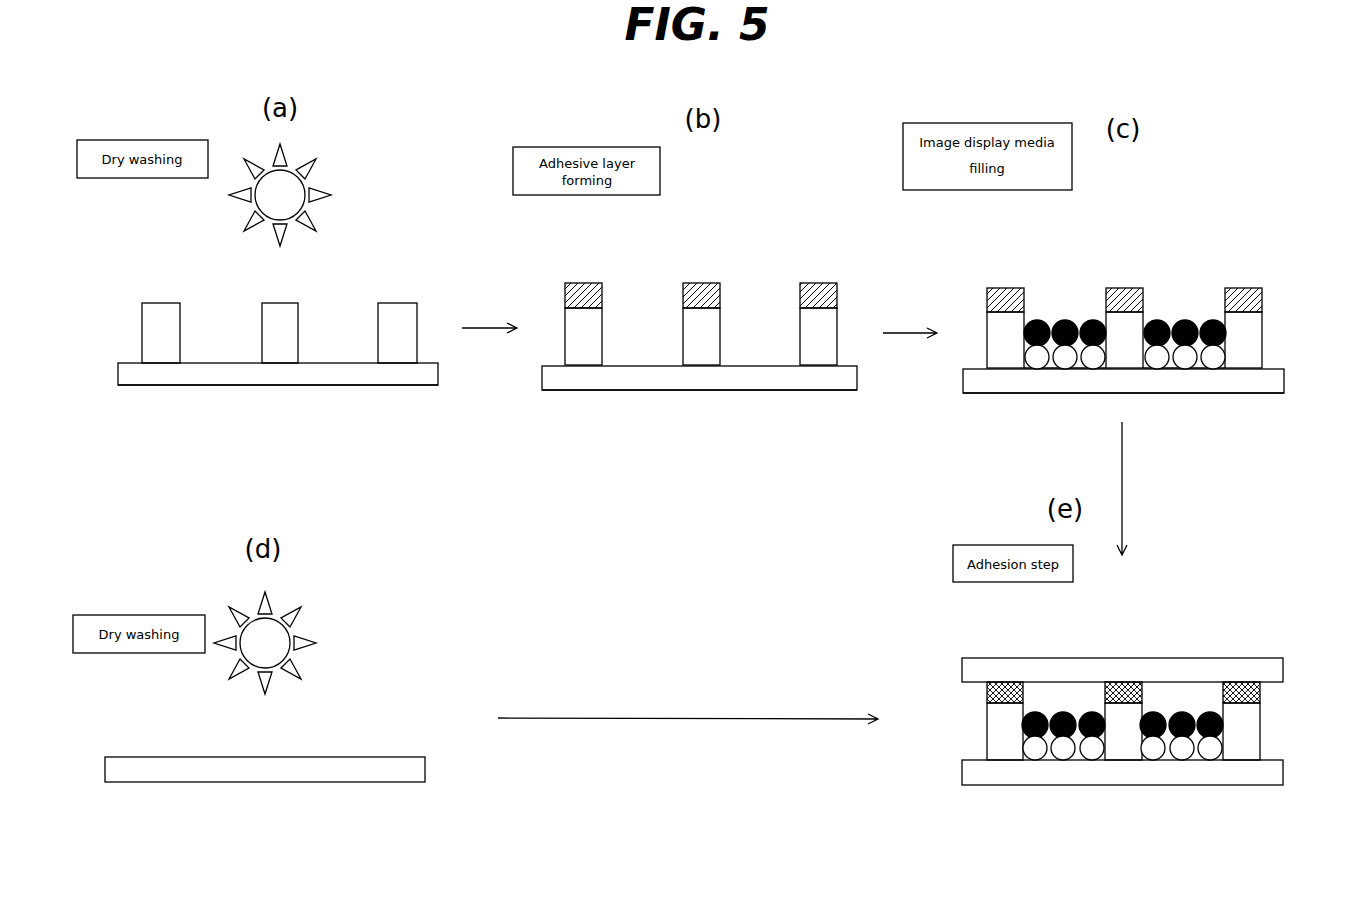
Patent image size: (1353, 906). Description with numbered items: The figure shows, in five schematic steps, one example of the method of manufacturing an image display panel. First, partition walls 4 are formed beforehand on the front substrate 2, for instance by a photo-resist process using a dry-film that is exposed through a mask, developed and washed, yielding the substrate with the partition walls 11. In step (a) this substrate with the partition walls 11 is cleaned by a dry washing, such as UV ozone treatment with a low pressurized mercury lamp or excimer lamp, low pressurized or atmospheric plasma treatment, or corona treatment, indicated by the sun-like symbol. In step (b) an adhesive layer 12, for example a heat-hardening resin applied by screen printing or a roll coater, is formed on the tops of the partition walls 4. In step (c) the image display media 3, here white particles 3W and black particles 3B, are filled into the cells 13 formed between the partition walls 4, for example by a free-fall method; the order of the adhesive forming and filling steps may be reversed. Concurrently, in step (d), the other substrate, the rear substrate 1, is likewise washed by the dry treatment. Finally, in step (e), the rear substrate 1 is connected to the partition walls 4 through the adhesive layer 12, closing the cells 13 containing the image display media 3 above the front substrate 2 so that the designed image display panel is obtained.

The rear substrate 1 is at (342, 768).
The front substrate 2 is at (288, 377).
The image display media 3 is at (1317, 310).
The black particles 3B is at (1225, 330).
The white particles 3W is at (1217, 358).
The partition walls 4 is at (290, 331).
The substrate with the partition walls 11 is at (372, 389).
The adhesive layer 12 is at (718, 291).
The cells 13 is at (1052, 312).